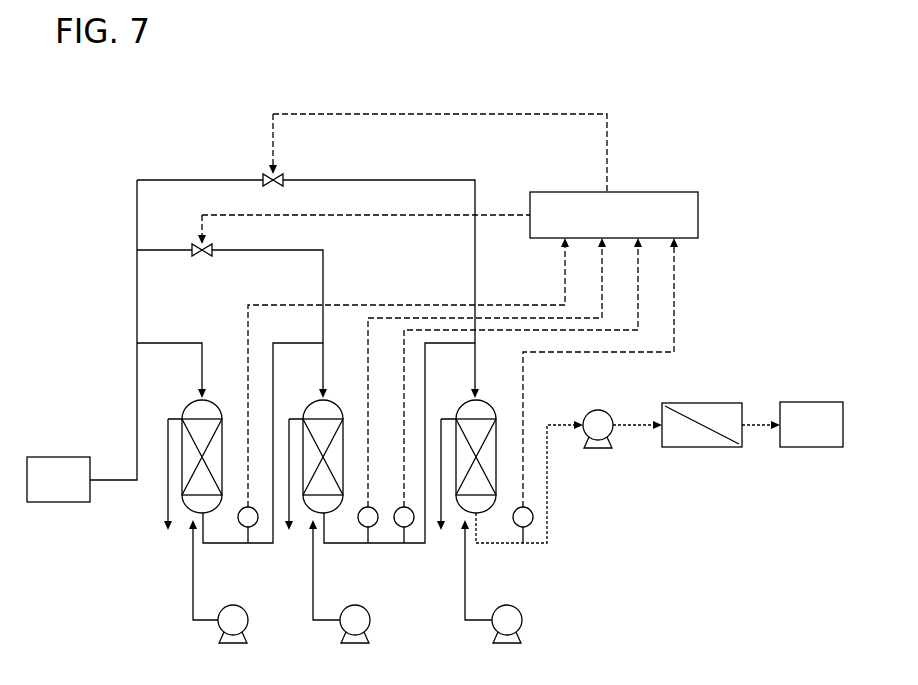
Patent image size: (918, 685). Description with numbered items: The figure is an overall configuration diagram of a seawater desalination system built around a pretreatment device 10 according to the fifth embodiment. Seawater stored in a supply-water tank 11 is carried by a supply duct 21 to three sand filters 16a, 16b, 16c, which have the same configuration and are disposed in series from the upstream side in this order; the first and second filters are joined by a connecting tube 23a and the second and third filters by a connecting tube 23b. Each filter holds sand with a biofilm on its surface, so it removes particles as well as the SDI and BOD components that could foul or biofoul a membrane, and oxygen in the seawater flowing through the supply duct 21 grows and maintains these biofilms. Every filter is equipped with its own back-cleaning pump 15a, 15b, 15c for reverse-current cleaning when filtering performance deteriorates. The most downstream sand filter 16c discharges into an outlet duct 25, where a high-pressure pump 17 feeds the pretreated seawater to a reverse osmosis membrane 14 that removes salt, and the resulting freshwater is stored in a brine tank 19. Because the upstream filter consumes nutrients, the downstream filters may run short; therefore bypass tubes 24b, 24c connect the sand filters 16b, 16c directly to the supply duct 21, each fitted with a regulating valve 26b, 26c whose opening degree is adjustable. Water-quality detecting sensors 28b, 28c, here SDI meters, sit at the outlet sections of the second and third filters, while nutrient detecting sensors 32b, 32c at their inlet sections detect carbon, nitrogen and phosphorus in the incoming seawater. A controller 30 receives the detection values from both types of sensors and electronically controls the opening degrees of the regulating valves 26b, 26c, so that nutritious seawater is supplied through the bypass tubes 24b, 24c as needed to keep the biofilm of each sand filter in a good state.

The pretreatment device 10 is at (729, 171).
The supply-water tank 11 is at (32, 457).
The reverse osmosis membrane 14 is at (722, 403).
The back-cleaning pump 15a is at (248, 628).
The back-cleaning pump 15b is at (370, 628).
The back-cleaning pump 15c is at (522, 628).
The sand filter 16a is at (214, 400).
The sand filter 16b is at (337, 400).
The sand filter 16c is at (490, 400).
The high-pressure pump 17 is at (602, 410).
The brine tank 19 is at (815, 402).
The supply duct 21 is at (137, 445).
The connecting tube 23a is at (232, 545).
The connecting tube 23b is at (355, 545).
The bypass tube 24b is at (278, 252).
The bypass tube 24c is at (366, 180).
The outlet duct 25 is at (549, 483).
The regulating valve 26b is at (196, 246).
The regulating valve 26c is at (265, 176).
The water-quality detecting sensor 28b is at (376, 523).
The water-quality detecting sensor 28c is at (531, 524).
The controller 30 is at (700, 215).
The nutrient detecting sensor 32b is at (257, 523).
The nutrient detecting sensor 32c is at (412, 524).